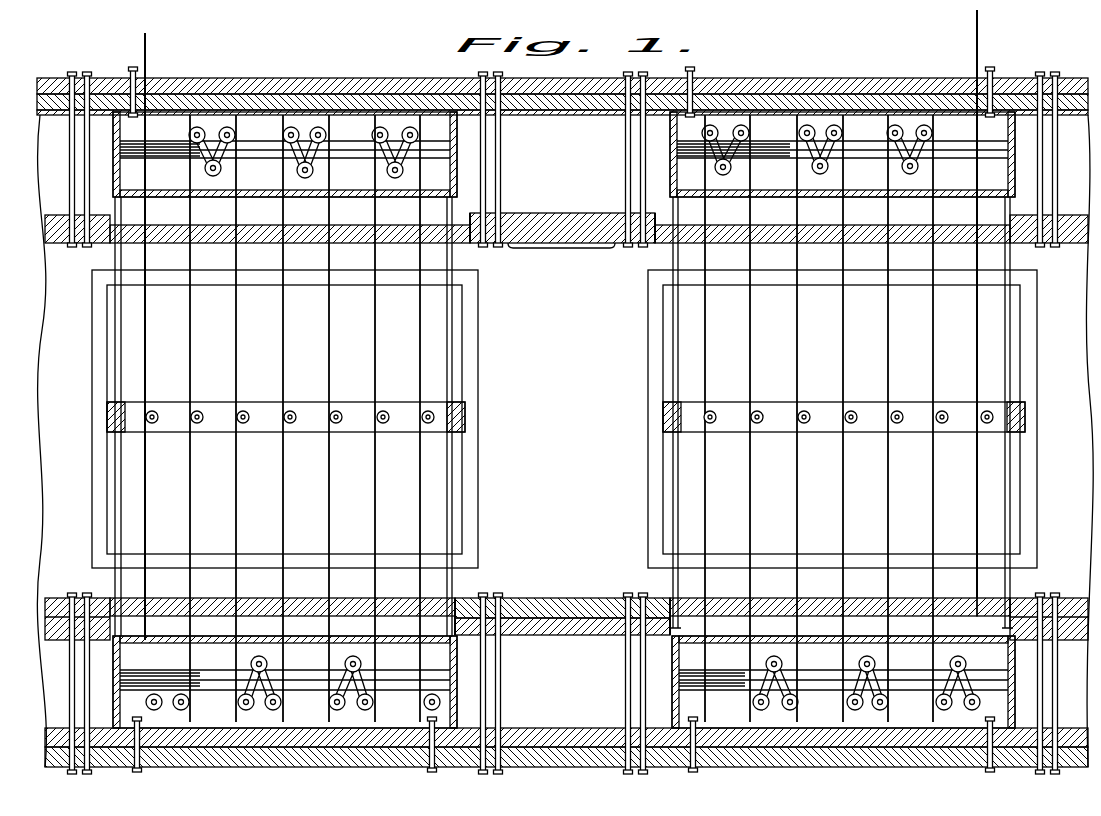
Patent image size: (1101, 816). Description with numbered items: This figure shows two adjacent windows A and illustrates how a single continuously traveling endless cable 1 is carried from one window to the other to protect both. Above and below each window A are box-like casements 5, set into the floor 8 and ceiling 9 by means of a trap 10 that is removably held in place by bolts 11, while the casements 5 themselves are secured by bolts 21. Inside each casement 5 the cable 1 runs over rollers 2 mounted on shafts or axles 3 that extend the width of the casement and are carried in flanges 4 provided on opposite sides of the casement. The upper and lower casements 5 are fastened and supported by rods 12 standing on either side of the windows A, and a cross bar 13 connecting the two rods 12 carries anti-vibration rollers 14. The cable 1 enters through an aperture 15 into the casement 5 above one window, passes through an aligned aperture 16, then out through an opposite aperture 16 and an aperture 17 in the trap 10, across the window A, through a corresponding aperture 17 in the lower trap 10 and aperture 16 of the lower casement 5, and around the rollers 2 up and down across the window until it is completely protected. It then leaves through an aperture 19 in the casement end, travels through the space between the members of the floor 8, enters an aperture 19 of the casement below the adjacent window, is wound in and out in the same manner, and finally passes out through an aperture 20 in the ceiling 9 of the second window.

The cable 1 is at (328, 373).
The rollers 2 is at (321, 128).
The shafts or axles 3 is at (366, 127).
The flanges 4 is at (258, 132).
The casements 5 is at (298, 90).
The floor 8 is at (565, 600).
The ceiling 9 is at (553, 243).
The trap 10 is at (470, 245).
The bolts 11 is at (87, 162).
The rods 12 is at (118, 323).
The cross bar 13 is at (308, 426).
The anti-vibration rollers 14 is at (335, 407).
The aperture 15 is at (973, 76).
The aperture 16 is at (974, 110).
The aperture 17 is at (950, 243).
The aperture 19 is at (460, 706).
The aperture 20 is at (147, 76).
The bolts 21 is at (698, 73).
The windows A is at (478, 520).